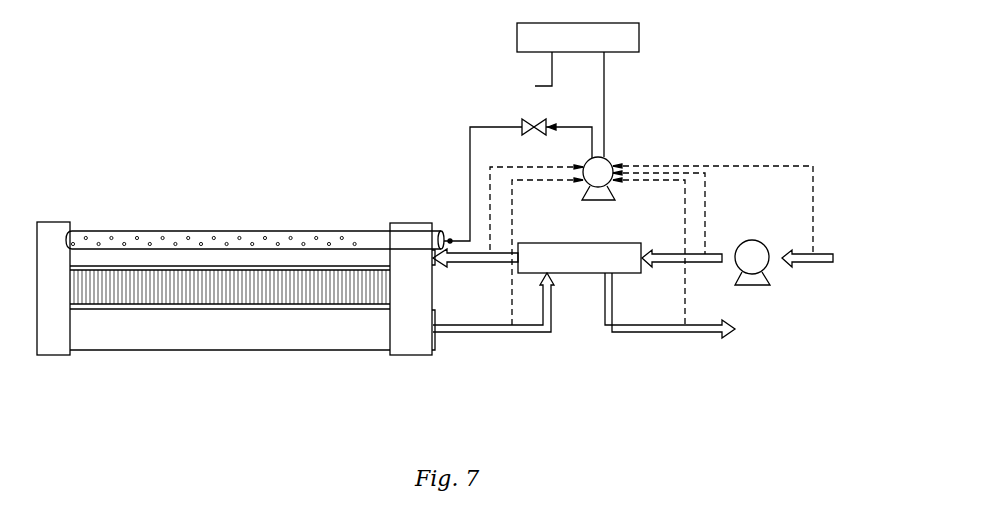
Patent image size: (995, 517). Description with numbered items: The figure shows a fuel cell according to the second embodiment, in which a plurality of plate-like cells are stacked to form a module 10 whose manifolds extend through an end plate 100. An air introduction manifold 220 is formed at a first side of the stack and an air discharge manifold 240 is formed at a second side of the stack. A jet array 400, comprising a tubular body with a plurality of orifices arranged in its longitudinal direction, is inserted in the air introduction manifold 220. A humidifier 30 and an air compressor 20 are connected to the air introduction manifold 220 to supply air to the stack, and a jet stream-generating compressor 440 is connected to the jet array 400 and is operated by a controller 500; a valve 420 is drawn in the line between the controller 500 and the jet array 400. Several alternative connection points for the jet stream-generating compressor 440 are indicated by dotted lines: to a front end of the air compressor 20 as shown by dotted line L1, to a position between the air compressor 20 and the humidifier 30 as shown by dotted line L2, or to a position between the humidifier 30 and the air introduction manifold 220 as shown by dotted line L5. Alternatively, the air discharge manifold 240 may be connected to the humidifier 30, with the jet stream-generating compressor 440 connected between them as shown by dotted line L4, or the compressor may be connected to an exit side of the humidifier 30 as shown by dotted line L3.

The air conditioning apparatus body 10 is at (117, 300).
The air compressor 20 is at (772, 265).
The humidifier 30 is at (578, 278).
The end plate 100 is at (410, 333).
The air introduction manifold 220 is at (163, 231).
The air discharge manifold 240 is at (262, 333).
The jet array 400 is at (374, 236).
The valve 420 is at (525, 122).
The jet stream-generating compressor 440 is at (617, 152).
The controller 500 is at (640, 35).
The dotted line L1 is at (790, 165).
The dotted line L2 is at (693, 165).
The dotted line L3 is at (685, 295).
The dotted line L4 is at (510, 200).
The dotted line L5 is at (523, 165).